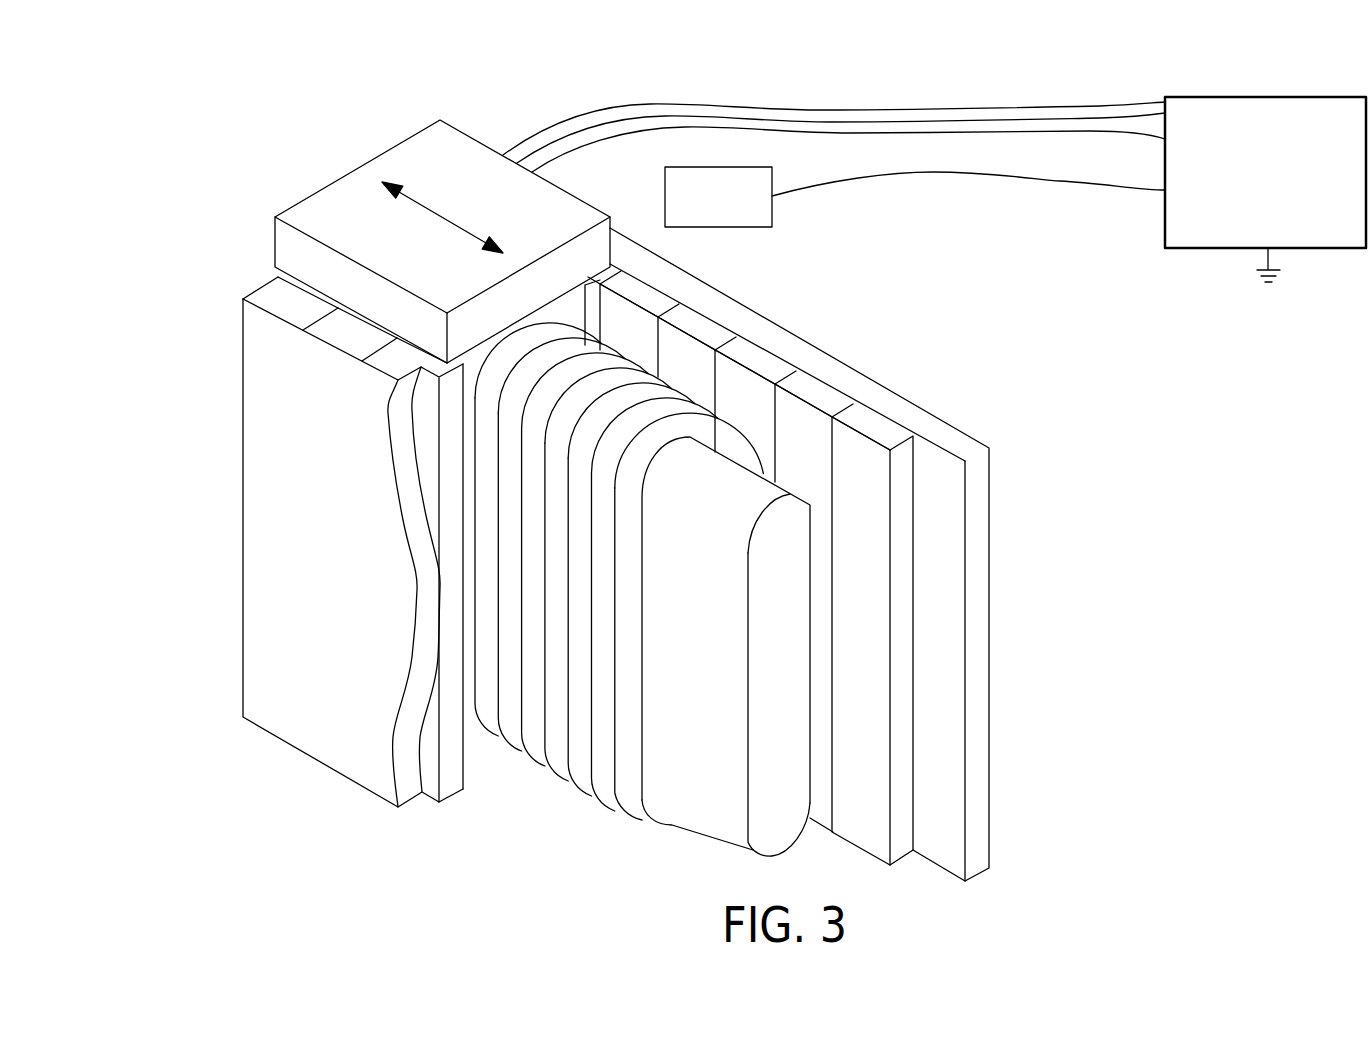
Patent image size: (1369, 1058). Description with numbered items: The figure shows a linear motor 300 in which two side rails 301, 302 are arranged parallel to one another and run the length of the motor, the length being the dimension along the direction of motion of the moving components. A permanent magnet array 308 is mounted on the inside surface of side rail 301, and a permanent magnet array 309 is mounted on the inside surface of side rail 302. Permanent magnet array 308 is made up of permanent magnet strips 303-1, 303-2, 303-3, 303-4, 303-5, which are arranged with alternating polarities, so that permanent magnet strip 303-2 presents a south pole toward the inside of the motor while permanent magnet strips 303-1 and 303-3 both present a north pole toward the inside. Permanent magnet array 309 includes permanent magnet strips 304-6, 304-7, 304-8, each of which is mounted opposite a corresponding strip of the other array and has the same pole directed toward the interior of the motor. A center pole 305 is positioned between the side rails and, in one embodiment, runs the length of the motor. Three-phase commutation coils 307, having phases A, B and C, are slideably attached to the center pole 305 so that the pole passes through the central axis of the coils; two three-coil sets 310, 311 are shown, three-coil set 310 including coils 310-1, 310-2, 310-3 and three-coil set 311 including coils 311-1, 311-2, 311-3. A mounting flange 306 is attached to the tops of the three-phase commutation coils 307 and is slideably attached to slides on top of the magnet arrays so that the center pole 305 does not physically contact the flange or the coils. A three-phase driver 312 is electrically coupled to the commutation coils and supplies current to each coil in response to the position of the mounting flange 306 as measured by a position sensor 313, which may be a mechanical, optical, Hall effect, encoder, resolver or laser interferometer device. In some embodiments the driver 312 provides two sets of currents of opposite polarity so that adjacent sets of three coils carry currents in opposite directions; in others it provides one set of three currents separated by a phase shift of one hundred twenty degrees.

The linear motor 300 is at (939, 257).
The side rail 301 is at (990, 608).
The side rail 302 is at (403, 523).
The permanent magnet strip 303-1 is at (873, 423).
The permanent magnet strip 303-2 is at (812, 387).
The permanent magnet strip 303-3 is at (757, 353).
The permanent magnet strip 303-4 is at (700, 320).
The permanent magnet strip 303-5 is at (647, 292).
The permanent magnet strip 304-6 is at (415, 357).
The permanent magnet strip 304-7 is at (363, 328).
The permanent magnet strip 304-8 is at (307, 297).
The center pole 305 is at (700, 627).
The mounting flange 306 is at (552, 200).
The three-phase commutation coils 307 is at (641, 793).
The permanent magnet array 308 is at (905, 708).
The permanent magnet array 309 is at (453, 762).
The three-coil set 310 is at (617, 587).
The coil 310-1 is at (605, 600).
The coil 310-2 is at (581, 587).
The coil 310-3 is at (557, 573).
The three-coil set 311 is at (570, 558).
The coil 311-1 is at (532, 560).
The coil 311-2 is at (508, 547).
The coil 311-3 is at (484, 533).
The three-phase driver 312 is at (1290, 221).
The position sensor 313 is at (703, 167).
The phase A is at (1108, 108).
The phase B is at (1128, 120).
The phase C is at (1097, 135).